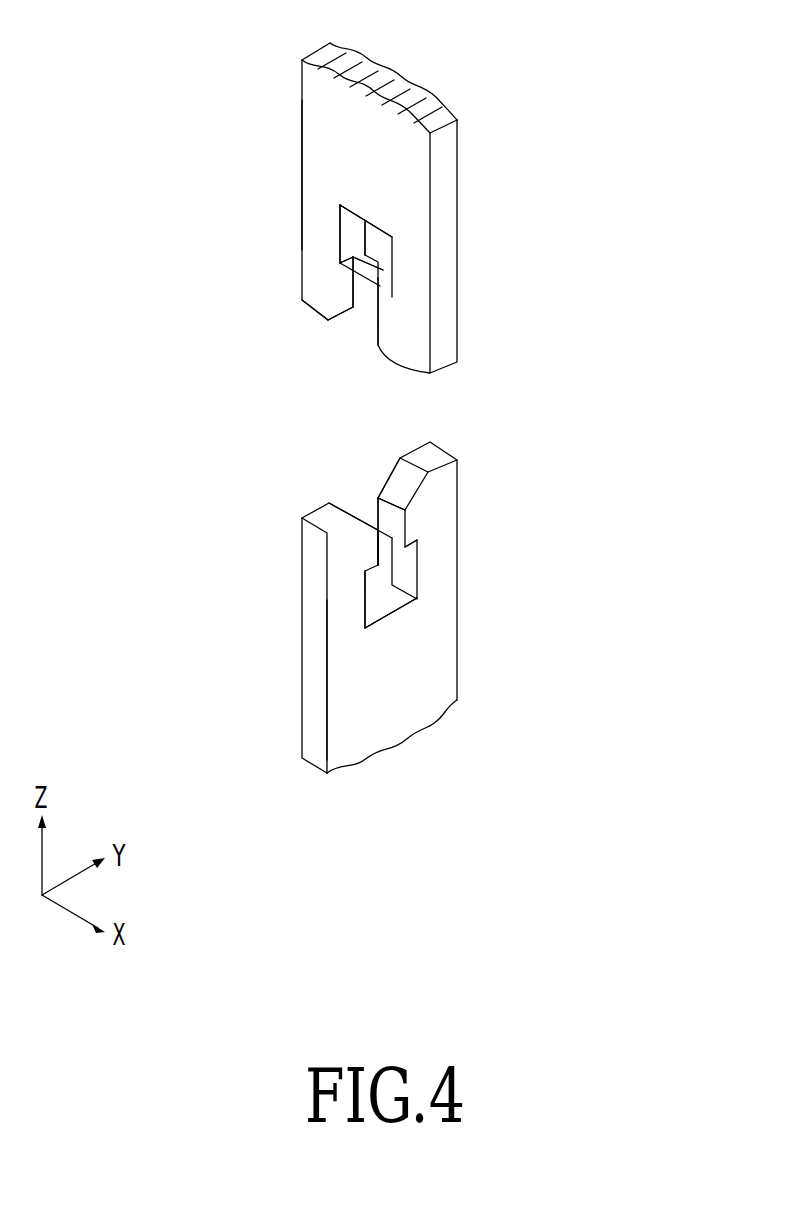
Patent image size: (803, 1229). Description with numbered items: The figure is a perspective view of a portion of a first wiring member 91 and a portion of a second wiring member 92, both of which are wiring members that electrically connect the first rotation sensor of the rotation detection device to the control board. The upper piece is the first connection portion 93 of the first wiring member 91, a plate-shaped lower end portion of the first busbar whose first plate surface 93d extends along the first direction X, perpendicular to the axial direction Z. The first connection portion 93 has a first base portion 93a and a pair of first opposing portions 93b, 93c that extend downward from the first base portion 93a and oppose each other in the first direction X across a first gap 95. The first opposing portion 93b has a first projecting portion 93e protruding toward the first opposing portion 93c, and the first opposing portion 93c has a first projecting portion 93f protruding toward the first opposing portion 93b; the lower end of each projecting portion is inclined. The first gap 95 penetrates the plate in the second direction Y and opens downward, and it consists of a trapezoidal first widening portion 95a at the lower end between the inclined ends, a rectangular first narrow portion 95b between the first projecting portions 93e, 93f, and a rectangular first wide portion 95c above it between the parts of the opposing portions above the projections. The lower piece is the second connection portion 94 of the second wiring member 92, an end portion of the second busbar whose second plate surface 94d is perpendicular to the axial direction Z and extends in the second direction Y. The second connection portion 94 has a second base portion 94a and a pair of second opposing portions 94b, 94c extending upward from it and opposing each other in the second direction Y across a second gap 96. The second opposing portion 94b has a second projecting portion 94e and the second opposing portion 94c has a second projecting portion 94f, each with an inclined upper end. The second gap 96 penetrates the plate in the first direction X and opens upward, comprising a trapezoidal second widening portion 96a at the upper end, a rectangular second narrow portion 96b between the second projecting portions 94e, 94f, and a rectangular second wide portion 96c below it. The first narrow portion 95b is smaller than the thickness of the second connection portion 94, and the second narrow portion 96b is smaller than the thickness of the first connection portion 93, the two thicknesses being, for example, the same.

The first wiring member 91 is at (468, 180).
The second wiring member 92 is at (468, 634).
The first connection portion 93 is at (158, 137).
The first base portion 93a is at (345, 171).
The first opposing portion 93b is at (318, 222).
The first opposing portion 93c is at (345, 262).
The first plate surface 93d is at (360, 130).
The first projecting portion 93e is at (343, 287).
The first projecting portion 93f is at (328, 320).
The second connection portion 94 is at (158, 583).
The second base portion 94a is at (392, 640).
The second opposing portion 94b is at (350, 610).
The second opposing portion 94c is at (378, 597).
The second plate surface 94d is at (406, 698).
The second projecting portion 94e is at (378, 558).
The second projecting portion 94f is at (378, 530).
The first gap 95 is at (600, 255).
The first widening portion 95a is at (364, 327).
The first narrow portion 95b is at (386, 272).
The first wide portion 95c is at (386, 247).
The second gap 96 is at (601, 445).
The second widening portion 96a is at (364, 488).
The second narrow portion 96b is at (402, 532).
The second wide portion 96c is at (404, 560).